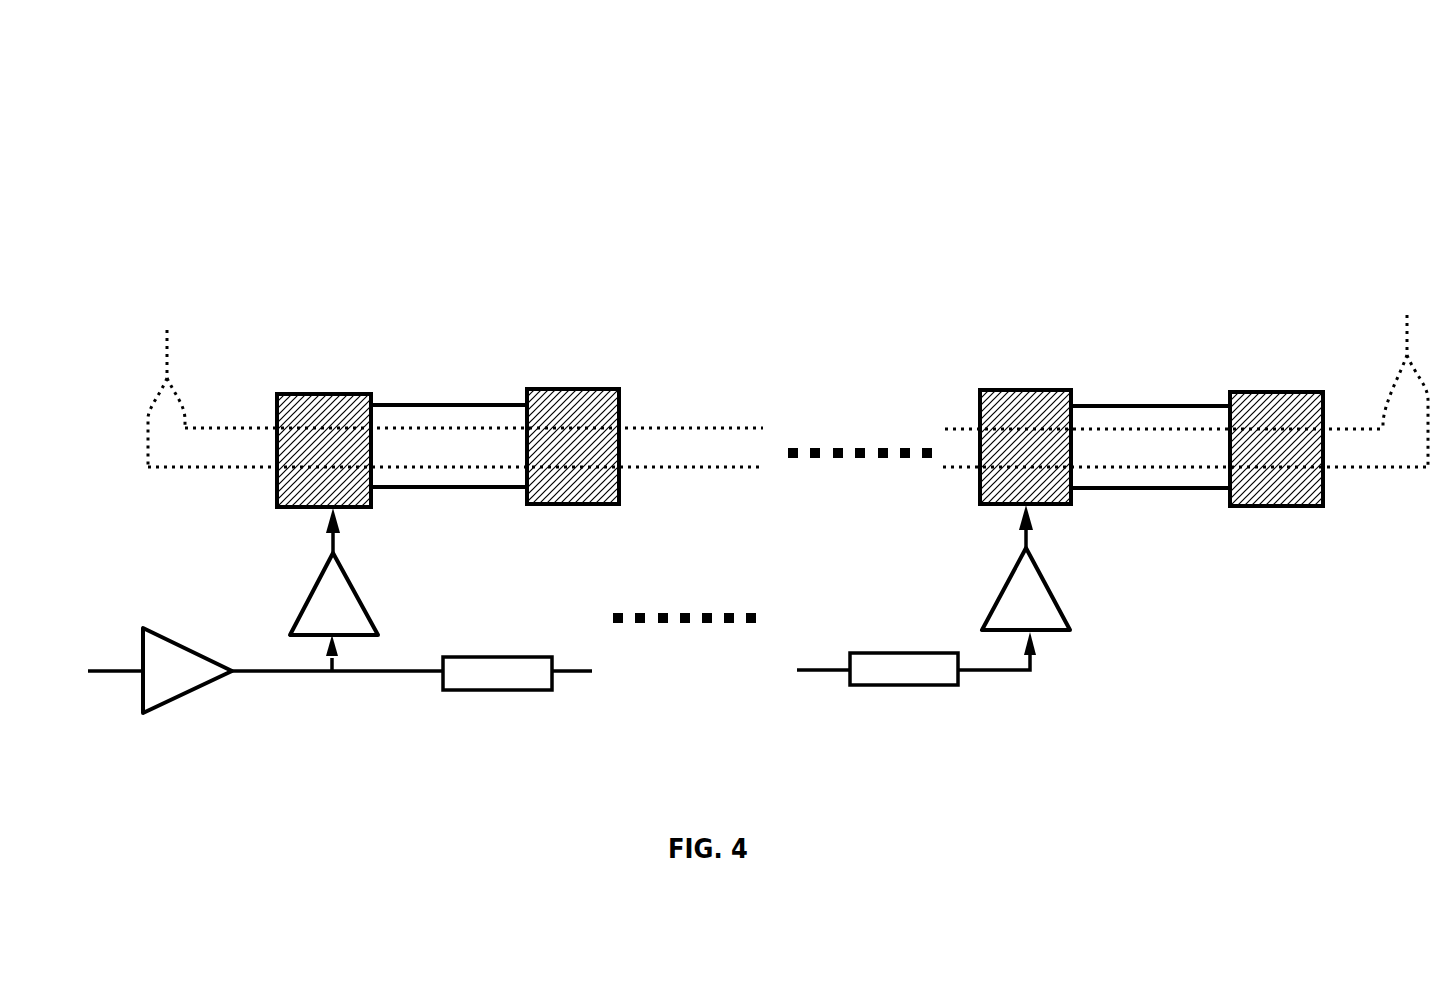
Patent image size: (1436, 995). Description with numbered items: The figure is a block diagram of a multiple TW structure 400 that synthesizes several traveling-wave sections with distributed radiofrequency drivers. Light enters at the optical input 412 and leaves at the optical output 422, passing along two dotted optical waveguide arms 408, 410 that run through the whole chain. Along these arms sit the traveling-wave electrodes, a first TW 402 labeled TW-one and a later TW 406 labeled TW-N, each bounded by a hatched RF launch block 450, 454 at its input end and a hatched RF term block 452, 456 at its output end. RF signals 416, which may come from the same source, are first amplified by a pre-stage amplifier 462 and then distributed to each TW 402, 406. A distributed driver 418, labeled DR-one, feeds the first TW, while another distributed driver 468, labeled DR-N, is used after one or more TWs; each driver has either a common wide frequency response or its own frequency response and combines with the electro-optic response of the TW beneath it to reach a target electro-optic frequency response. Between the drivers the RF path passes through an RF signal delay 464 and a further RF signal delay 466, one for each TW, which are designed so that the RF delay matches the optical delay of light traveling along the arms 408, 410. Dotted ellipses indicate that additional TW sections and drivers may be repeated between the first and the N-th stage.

The multiple TW structure 400 is at (997, 135).
The optical input 412 is at (188, 300).
The optical output 422 is at (1365, 270).
The TW 402 is at (485, 404).
The TW 406 is at (1090, 406).
The first optical waveguide arm 408 is at (653, 428).
The second optical waveguide arm 410 is at (640, 468).
The RF launch of first segment 450 is at (370, 391).
The RF termination of first segment 452 is at (617, 388).
The RF launch of N-th segment 454 is at (978, 390).
The RF termination of N-th segment 456 is at (1226, 393).
The RF signals 416 is at (105, 675).
The pre-stage amplifier 462 is at (193, 692).
The driver 418 is at (350, 573).
The RF signal delay 464 is at (498, 690).
The RF signal delay 466 is at (932, 685).
The driver 468 is at (1040, 568).